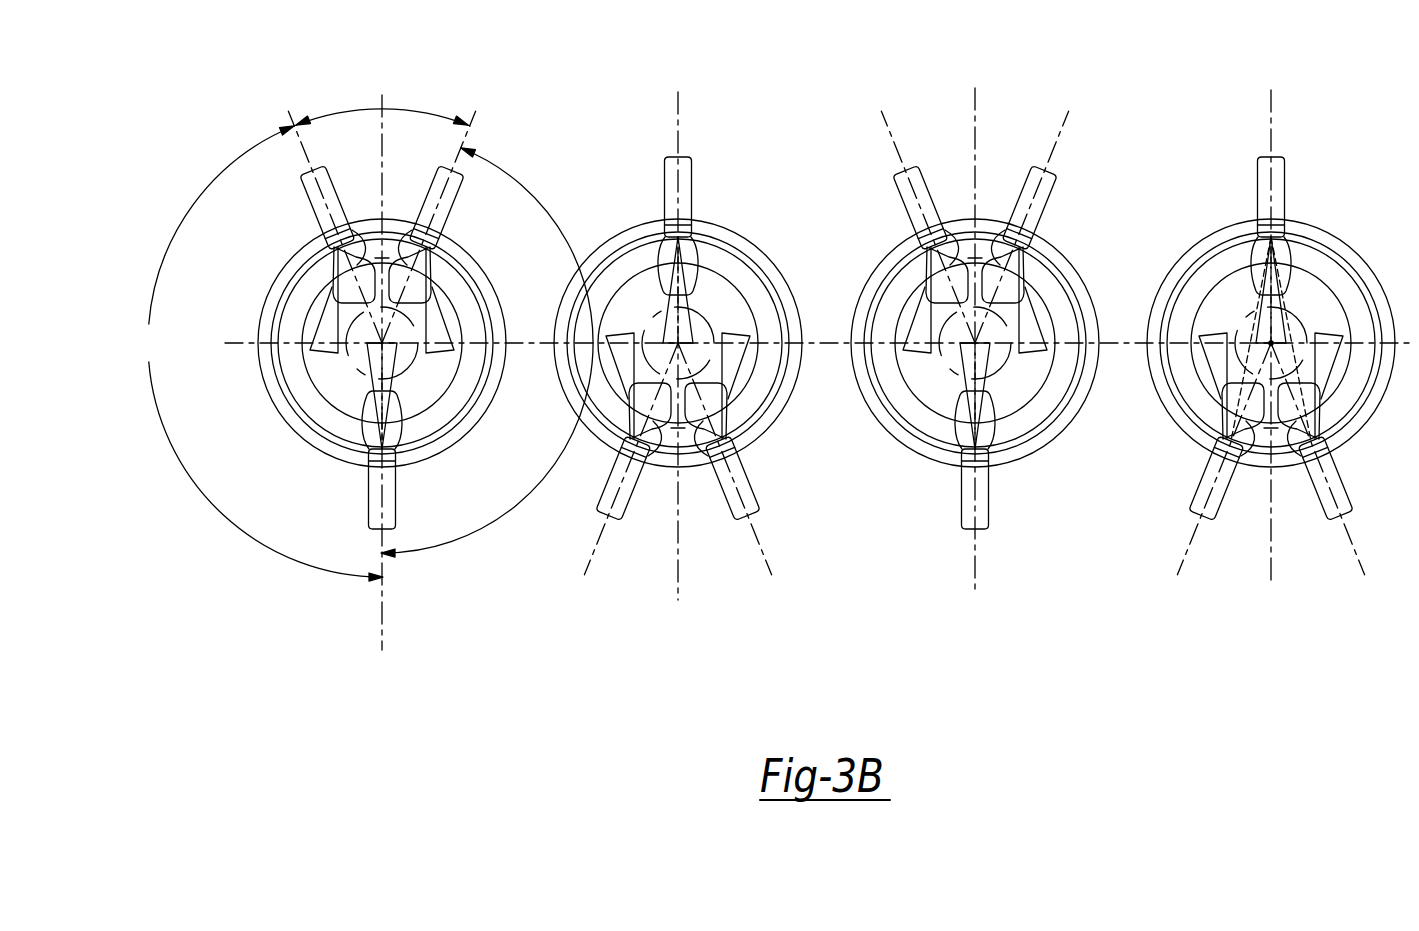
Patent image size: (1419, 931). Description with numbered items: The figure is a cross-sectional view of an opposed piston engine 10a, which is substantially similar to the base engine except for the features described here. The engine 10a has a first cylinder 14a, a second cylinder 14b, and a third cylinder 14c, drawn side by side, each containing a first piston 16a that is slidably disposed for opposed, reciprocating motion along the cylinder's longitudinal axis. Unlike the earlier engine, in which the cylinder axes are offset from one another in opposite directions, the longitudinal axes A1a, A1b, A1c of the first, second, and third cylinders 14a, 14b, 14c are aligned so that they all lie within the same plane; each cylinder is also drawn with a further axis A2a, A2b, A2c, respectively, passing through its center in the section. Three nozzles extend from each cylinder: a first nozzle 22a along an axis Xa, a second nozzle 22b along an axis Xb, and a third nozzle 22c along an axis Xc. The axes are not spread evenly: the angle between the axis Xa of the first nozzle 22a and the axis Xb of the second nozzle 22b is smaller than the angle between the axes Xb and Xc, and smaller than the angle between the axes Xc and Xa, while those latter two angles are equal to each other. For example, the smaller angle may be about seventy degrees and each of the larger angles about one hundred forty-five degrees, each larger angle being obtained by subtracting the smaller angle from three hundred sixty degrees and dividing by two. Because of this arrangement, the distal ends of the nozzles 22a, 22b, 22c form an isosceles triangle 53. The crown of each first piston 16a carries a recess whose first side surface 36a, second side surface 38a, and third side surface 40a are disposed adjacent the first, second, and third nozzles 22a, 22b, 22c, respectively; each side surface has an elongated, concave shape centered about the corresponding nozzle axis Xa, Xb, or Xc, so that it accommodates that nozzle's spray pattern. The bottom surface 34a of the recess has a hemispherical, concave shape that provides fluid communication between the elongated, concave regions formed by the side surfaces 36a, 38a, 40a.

The engine 10a is at (235, 113).
The first cylinder 14a is at (267, 326).
The second cylinder 14b is at (780, 277).
The third cylinder 14c is at (1083, 297).
The first piston 16a is at (302, 298).
The first nozzle 22a is at (375, 516).
The second nozzle 22b is at (323, 226).
The third nozzle 22c is at (440, 225).
The bottom surface 34a is at (366, 381).
The first side surface 36a is at (367, 422).
The second side surface 38a is at (362, 246).
The third side surface 40a is at (402, 246).
The isosceles triangle 53 is at (1290, 304).
The axis of first nozzle Xa is at (382, 605).
The axis of second nozzle Xb is at (297, 145).
The axis of third nozzle Xc is at (477, 140).
The longitudinal axis of first cylinder A1a is at (383, 345).
The longitudinal axis of second cylinder A1b is at (679, 345).
The longitudinal axis of third cylinder A1c is at (977, 345).
The second axis A2a is at (377, 160).
The second axis A2b is at (678, 590).
The second axis A2c is at (975, 108).